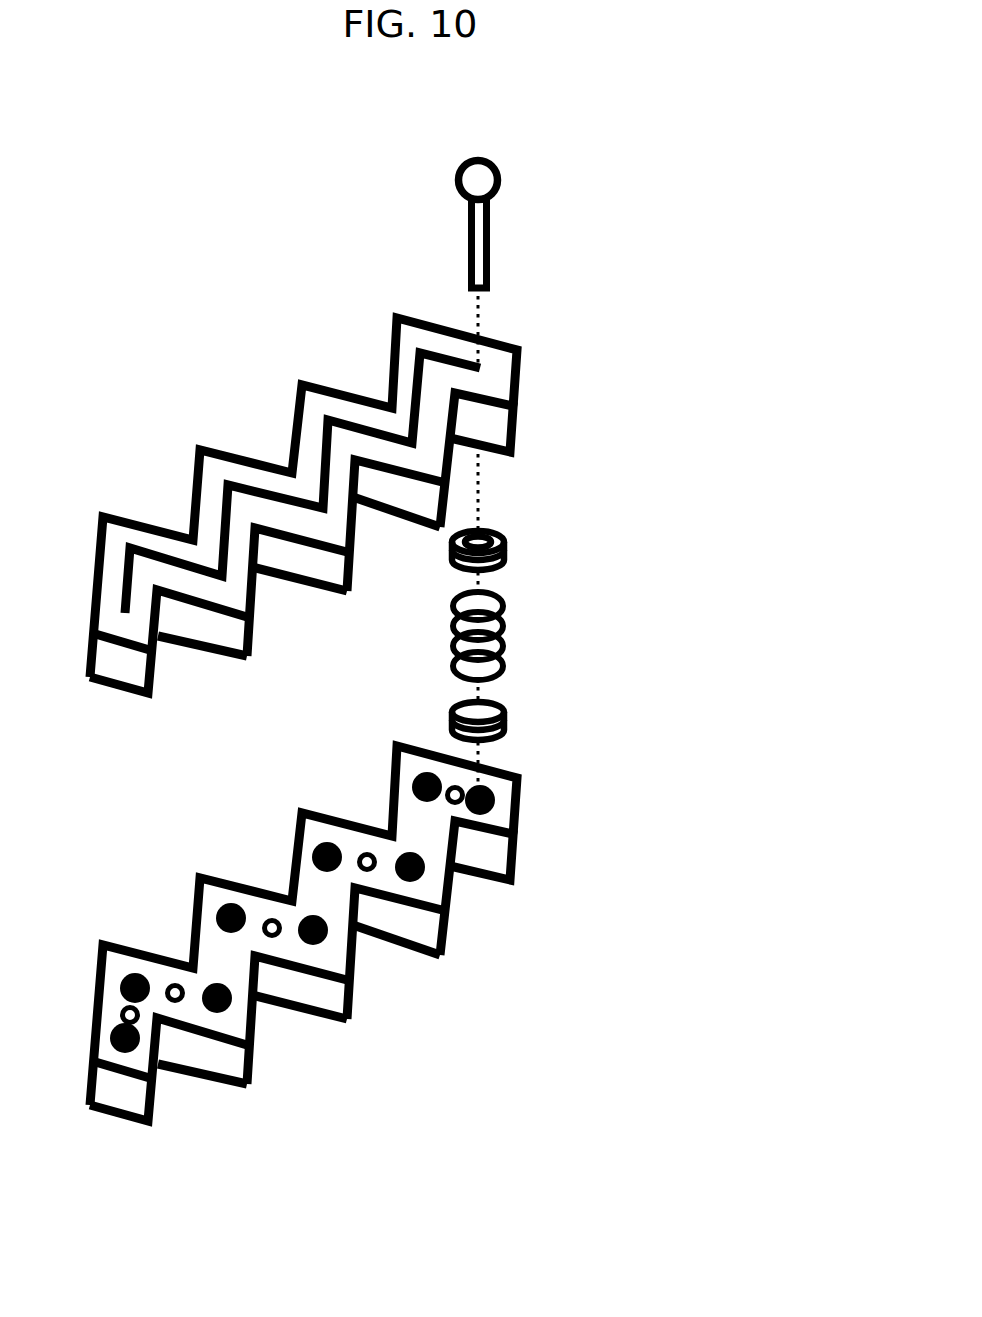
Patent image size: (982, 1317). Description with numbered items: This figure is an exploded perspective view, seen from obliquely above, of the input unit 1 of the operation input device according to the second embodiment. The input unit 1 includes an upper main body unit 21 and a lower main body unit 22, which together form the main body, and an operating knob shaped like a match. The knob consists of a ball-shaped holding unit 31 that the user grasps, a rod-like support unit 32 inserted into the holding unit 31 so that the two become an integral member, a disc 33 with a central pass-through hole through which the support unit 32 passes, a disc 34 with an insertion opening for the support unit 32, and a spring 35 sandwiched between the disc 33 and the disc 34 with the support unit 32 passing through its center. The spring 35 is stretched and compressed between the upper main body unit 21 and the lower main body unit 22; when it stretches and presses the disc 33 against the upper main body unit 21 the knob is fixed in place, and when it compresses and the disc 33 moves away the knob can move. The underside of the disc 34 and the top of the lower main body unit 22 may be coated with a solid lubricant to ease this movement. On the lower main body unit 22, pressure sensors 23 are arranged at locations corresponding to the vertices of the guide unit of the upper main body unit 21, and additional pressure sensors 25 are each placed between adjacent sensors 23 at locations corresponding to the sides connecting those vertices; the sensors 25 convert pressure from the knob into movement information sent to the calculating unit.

The input unit 1 is at (681, 159).
The upper main body unit 21 is at (397, 317).
The lower main body unit 22 is at (345, 931).
The sensors 23 is at (492, 790).
The sensors 25 is at (364, 856).
The holding unit 31 is at (494, 158).
The support unit 32 is at (490, 236).
The disc 33 is at (505, 537).
The disc 34 is at (505, 710).
The spring 35 is at (503, 607).